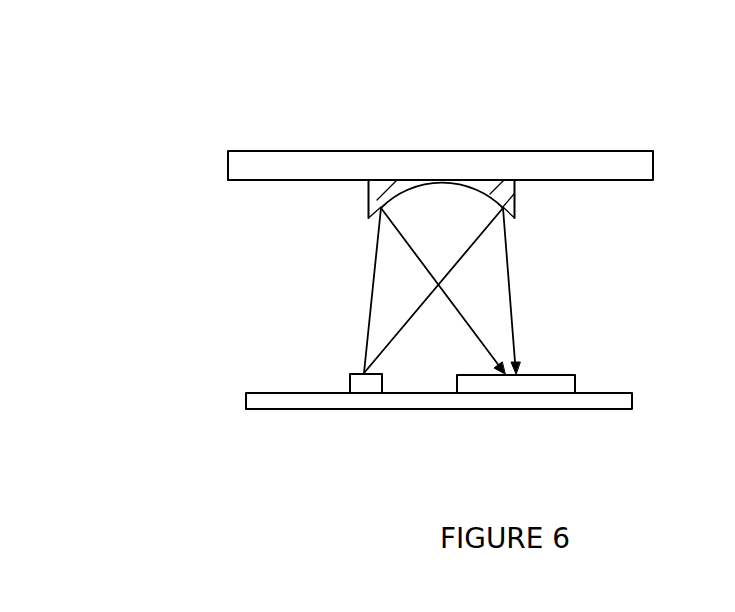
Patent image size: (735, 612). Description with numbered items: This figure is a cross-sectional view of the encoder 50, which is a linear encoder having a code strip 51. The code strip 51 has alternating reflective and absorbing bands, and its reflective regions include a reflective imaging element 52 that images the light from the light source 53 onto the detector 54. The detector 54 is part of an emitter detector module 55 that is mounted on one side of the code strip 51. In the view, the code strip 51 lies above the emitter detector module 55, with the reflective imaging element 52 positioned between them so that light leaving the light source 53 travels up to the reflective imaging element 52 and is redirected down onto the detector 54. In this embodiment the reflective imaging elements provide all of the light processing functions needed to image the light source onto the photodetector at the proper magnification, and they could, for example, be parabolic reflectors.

The encoder 50 is at (166, 114).
The code strip 51 is at (512, 160).
The reflective imaging element 52 is at (370, 201).
The light source 53 is at (370, 383).
The detector 54 is at (562, 385).
The emitter detector module 55 is at (620, 404).